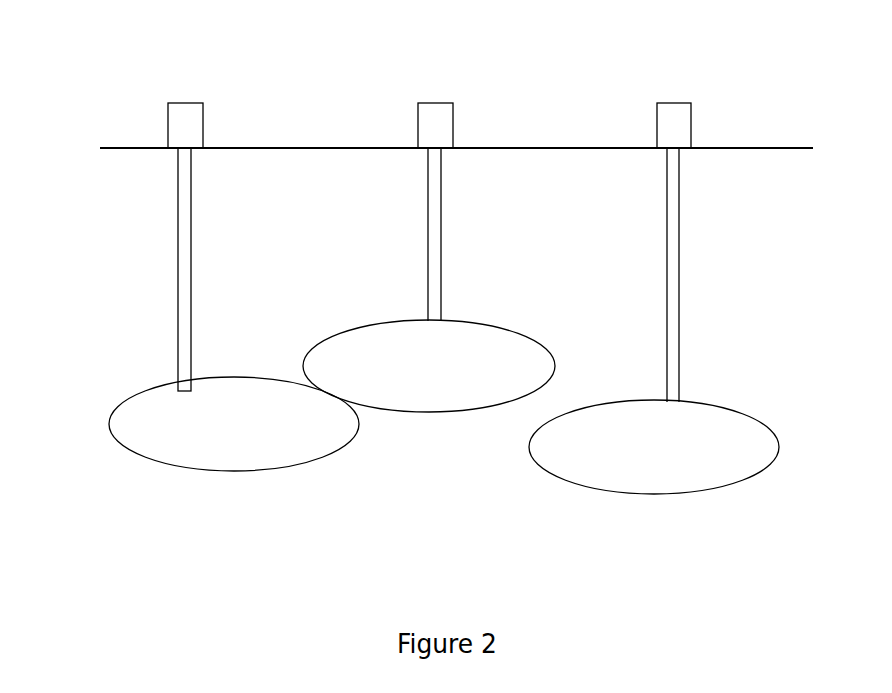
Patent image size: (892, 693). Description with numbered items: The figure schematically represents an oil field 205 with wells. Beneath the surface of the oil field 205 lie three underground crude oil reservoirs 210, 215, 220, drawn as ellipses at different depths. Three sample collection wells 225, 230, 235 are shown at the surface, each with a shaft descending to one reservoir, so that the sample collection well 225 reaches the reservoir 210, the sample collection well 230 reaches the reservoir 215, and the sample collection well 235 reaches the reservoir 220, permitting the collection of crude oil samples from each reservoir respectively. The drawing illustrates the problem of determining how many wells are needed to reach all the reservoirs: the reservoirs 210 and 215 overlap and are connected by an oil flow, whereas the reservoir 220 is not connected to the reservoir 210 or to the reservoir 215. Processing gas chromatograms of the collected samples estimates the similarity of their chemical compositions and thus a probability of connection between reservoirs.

The oil field 205 is at (157, 183).
The underground crude oil reservoir 210 is at (222, 454).
The underground crude oil reservoir 215 is at (485, 398).
The underground crude oil reservoir 220 is at (599, 477).
The sample collection well 225 is at (180, 115).
The sample collection well 230 is at (430, 115).
The sample collection well 235 is at (668, 115).